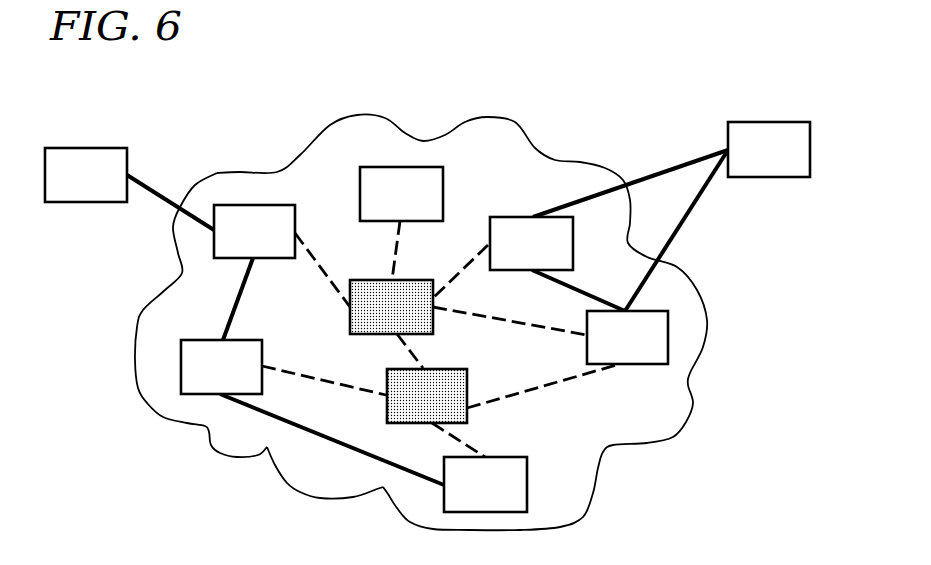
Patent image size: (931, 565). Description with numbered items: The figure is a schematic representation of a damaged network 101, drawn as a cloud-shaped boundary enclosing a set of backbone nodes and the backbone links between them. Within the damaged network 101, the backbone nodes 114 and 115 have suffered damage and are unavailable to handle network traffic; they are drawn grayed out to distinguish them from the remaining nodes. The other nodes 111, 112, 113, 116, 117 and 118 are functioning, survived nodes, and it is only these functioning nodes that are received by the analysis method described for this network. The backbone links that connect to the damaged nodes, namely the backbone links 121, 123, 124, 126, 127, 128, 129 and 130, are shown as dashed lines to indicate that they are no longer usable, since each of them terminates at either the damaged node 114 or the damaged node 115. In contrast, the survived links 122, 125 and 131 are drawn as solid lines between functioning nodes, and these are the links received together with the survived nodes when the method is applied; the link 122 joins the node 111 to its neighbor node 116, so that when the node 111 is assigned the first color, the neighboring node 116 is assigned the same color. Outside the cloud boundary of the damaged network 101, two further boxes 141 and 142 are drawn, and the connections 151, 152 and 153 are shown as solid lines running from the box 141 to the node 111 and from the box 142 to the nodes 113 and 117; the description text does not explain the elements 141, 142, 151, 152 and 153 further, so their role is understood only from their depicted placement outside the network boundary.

The damaged network 101 is at (268, 102).
The network node 111 is at (272, 244).
The network node 112 is at (420, 207).
The network node 113 is at (550, 256).
The damaged backbone node 114 is at (410, 320).
The damaged backbone node 115 is at (445, 409).
The network node 116 is at (240, 380).
The network node 117 is at (646, 350).
The network node 118 is at (504, 498).
The backbone link 121 is at (320, 263).
The backbone link 122 is at (236, 294).
The backbone link 123 is at (404, 253).
The backbone link 124 is at (463, 278).
The backbone link 125 is at (585, 293).
The backbone link 126 is at (406, 348).
The backbone link 127 is at (530, 325).
The backbone link 128 is at (305, 376).
The backbone link 129 is at (538, 388).
The backbone link 130 is at (463, 442).
The backbone link 131 is at (350, 449).
The external device 141 is at (104, 188).
The external device 142 is at (787, 162).
The connection 151 is at (160, 195).
The connection 152 is at (668, 168).
The connection 153 is at (686, 215).